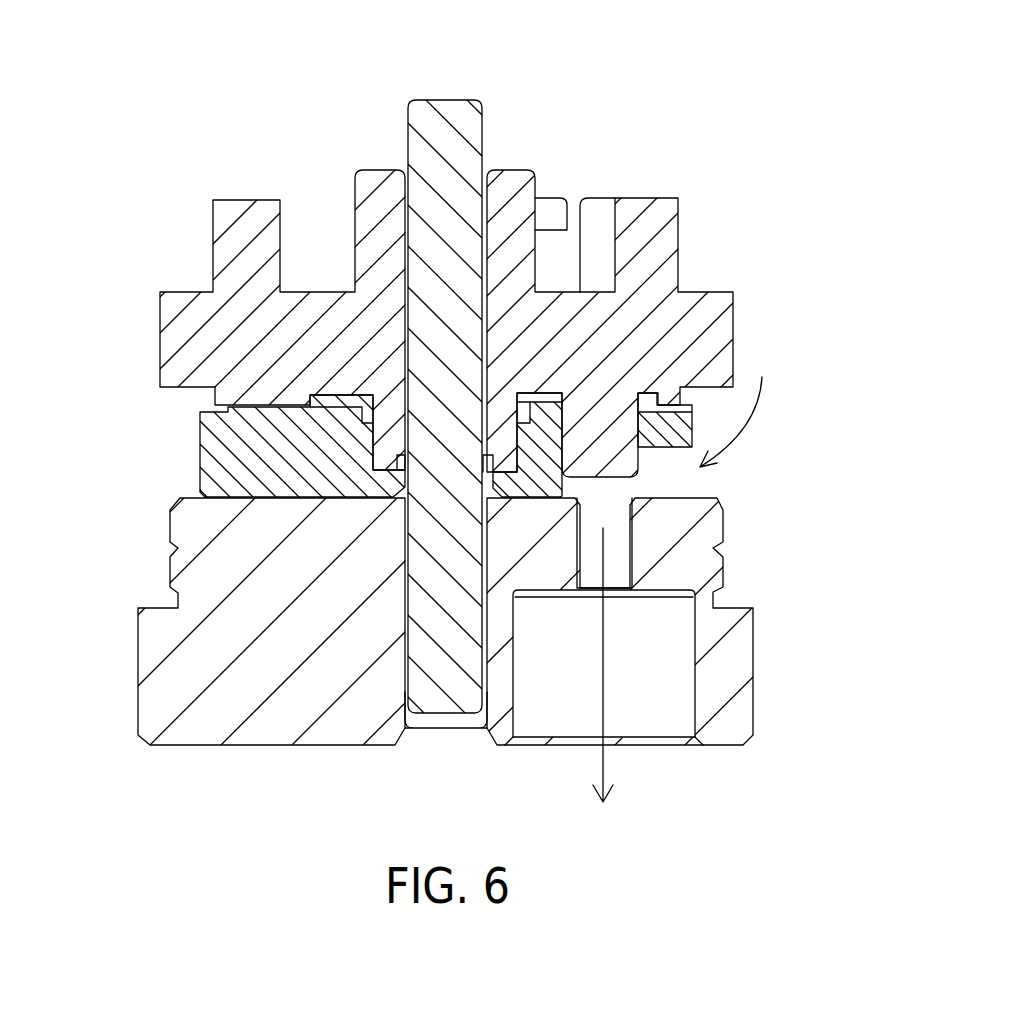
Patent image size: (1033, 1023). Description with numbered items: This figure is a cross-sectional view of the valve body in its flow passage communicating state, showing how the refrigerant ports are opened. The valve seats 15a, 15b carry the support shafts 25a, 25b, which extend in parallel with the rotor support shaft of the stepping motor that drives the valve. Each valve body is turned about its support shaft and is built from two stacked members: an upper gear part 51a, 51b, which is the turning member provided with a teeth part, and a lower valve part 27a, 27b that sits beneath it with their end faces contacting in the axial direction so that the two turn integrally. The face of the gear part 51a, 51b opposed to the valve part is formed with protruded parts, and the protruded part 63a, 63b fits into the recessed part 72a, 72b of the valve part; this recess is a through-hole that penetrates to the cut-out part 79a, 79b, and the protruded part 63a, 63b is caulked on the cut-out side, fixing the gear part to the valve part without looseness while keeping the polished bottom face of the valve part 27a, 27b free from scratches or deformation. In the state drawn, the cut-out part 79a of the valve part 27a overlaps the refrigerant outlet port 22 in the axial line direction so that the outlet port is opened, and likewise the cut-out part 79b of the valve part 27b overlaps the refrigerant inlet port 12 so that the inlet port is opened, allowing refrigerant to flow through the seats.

The support shaft 25a is at (516, 364).
The support shaft 25b is at (484, 122).
The gear part 51a is at (505, 313).
The gear part 51b is at (201, 235).
The protruded part 63a is at (617, 384).
The protruded part 63b is at (598, 423).
The recessed part 72a is at (740, 387).
The recessed part 72b is at (640, 430).
The valve part 27a is at (269, 457).
The valve part 27b is at (183, 468).
The cut-out part 79a is at (715, 532).
The cut-out part 79b is at (665, 483).
The valve seat 15a is at (501, 621).
The valve seat 15b is at (147, 580).
The refrigerant outlet port 22 is at (684, 663).
The refrigerant inlet port 12 is at (673, 682).